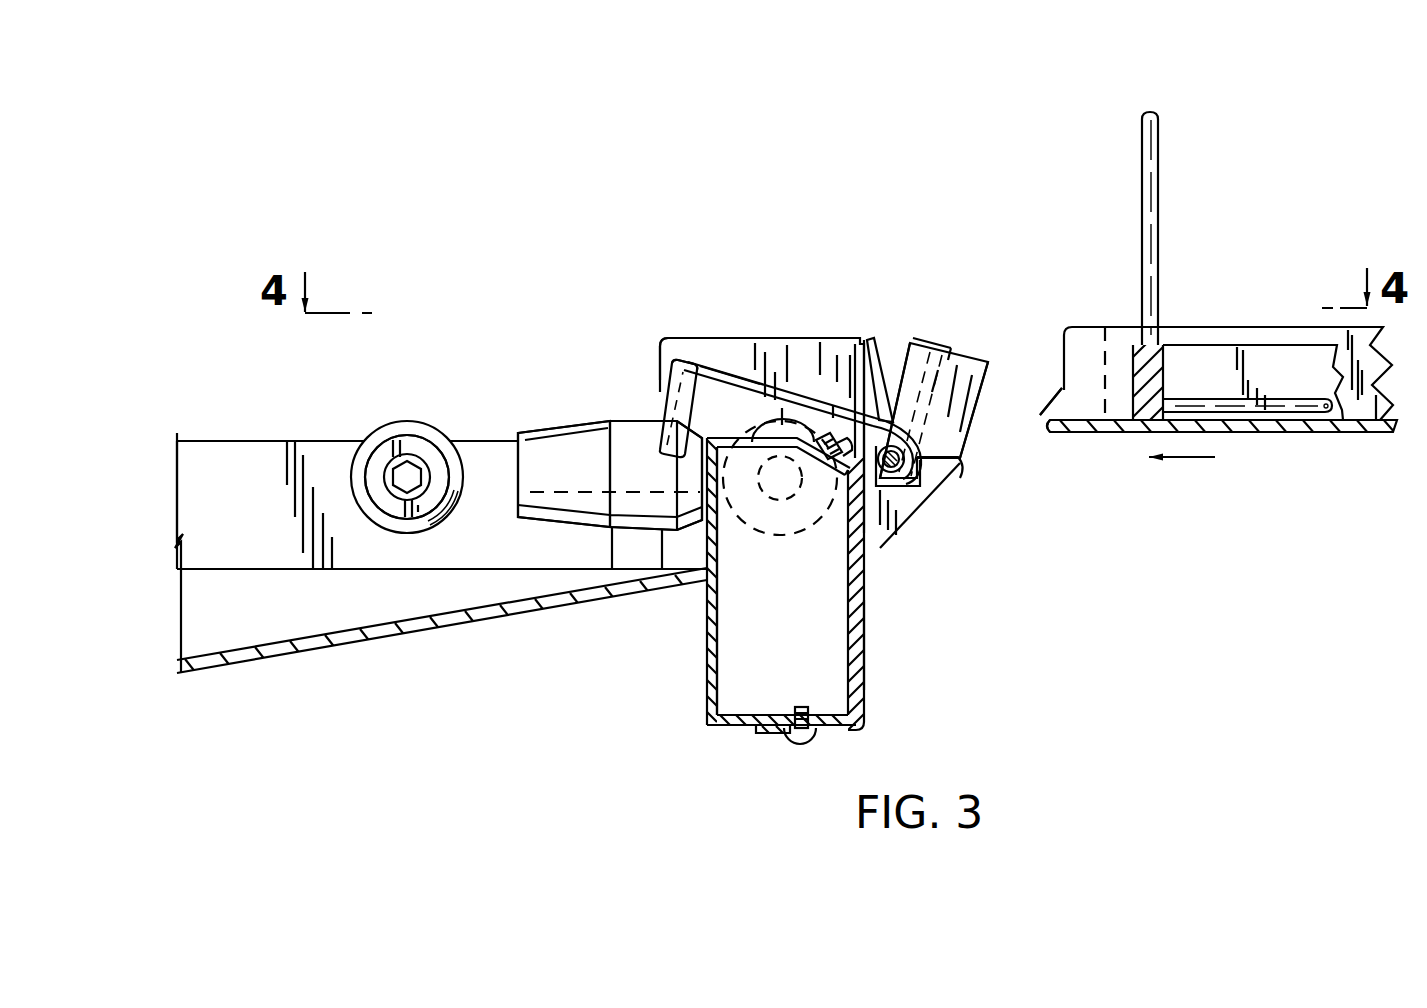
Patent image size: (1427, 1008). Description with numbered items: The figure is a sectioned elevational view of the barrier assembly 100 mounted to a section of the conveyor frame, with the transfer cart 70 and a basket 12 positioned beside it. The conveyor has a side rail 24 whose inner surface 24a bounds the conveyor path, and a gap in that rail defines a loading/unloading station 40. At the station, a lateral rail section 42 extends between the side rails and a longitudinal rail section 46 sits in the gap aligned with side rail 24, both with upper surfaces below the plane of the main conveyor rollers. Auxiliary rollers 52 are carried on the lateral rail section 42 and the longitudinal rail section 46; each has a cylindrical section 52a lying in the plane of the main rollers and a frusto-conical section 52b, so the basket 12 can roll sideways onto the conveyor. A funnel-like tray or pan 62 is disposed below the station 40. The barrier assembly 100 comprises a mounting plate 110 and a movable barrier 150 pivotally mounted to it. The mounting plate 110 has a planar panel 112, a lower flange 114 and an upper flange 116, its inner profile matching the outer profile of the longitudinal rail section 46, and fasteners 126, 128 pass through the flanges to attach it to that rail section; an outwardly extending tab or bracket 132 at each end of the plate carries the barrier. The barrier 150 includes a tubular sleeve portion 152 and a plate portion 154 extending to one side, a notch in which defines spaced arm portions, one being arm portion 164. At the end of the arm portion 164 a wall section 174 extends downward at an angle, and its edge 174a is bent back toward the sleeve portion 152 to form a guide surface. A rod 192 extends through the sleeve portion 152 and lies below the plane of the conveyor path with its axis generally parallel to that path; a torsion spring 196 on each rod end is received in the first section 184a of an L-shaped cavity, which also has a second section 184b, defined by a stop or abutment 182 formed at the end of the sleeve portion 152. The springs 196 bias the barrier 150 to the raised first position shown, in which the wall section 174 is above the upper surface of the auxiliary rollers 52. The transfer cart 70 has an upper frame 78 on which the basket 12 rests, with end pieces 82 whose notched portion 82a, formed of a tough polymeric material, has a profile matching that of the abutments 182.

The basket 12 is at (1140, 176).
The side rail 24 is at (805, 335).
The inner surface 24a is at (660, 352).
The loading/unloading station 40 is at (177, 492).
The lateral rail section 42 is at (240, 440).
The longitudinal rail section 46 is at (709, 438).
The auxiliary roller 52 is at (411, 419).
The cylindrical section 52a is at (378, 430).
The frusto-conical section 52b is at (548, 428).
The tray or pan 62 is at (213, 657).
The transfer cart 70 is at (1257, 447).
The upper frame 78 is at (1290, 430).
The end piece 82 is at (1080, 324).
The notched portion 82a is at (1040, 415).
The barrier assembly 100 is at (750, 400).
The mounting plate 110 is at (866, 645).
The planar panel 112 is at (862, 616).
The lower flange 114 is at (760, 732).
The upper flange 116 is at (826, 440).
The fastener 126 is at (799, 738).
The fastener 128 is at (833, 472).
The tab or bracket 132 is at (882, 548).
The movable barrier 150 is at (843, 395).
The tubular or sleeve-like portion 152 is at (921, 488).
The plate portion 154 is at (726, 374).
The arm portion 164 is at (720, 373).
The wall section 174 is at (676, 392).
The edge 174a is at (679, 382).
The stop or abutment 182 is at (944, 334).
The first section 184a is at (935, 417).
The second section 184b is at (993, 385).
The rod 192 is at (925, 483).
The torsion spring 196 is at (876, 360).